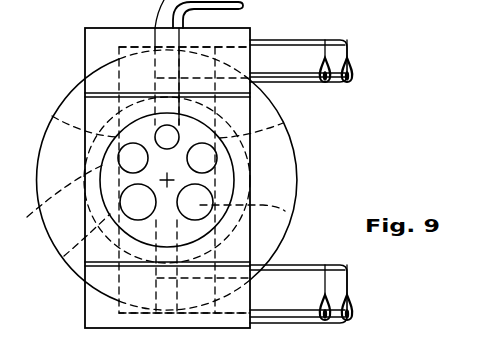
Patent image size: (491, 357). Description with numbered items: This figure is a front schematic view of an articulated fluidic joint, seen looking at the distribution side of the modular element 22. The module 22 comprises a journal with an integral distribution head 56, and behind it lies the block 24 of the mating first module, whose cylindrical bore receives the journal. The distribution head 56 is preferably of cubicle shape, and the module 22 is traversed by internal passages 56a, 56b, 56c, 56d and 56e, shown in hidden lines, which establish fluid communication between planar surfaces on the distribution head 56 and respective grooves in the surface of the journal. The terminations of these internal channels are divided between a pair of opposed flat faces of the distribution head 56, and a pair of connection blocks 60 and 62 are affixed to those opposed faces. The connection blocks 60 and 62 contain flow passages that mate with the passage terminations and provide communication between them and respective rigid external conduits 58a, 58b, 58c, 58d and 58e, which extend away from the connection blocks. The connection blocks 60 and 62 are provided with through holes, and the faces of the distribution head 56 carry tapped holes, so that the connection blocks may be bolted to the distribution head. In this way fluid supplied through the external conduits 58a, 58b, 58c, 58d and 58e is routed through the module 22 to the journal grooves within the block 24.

The modular element 22 is at (320, 140).
The block 24 is at (297, 156).
The distribution head 56 is at (96, 108).
The internal passage 56a is at (285, 211).
The internal passage 56b is at (283, 122).
The internal passage 56c is at (56, 204).
The internal passage 56d is at (66, 255).
The internal passage 56e is at (54, 116).
The rigid external conduit 58a is at (355, 314).
The rigid external conduit 58b is at (354, 73).
The rigid external conduit 58c is at (317, 52).
The rigid external conduit 58d is at (352, 283).
The rigid external conduit 58e is at (247, 7).
The connection block 60 is at (96, 38).
The connection block 62 is at (97, 311).